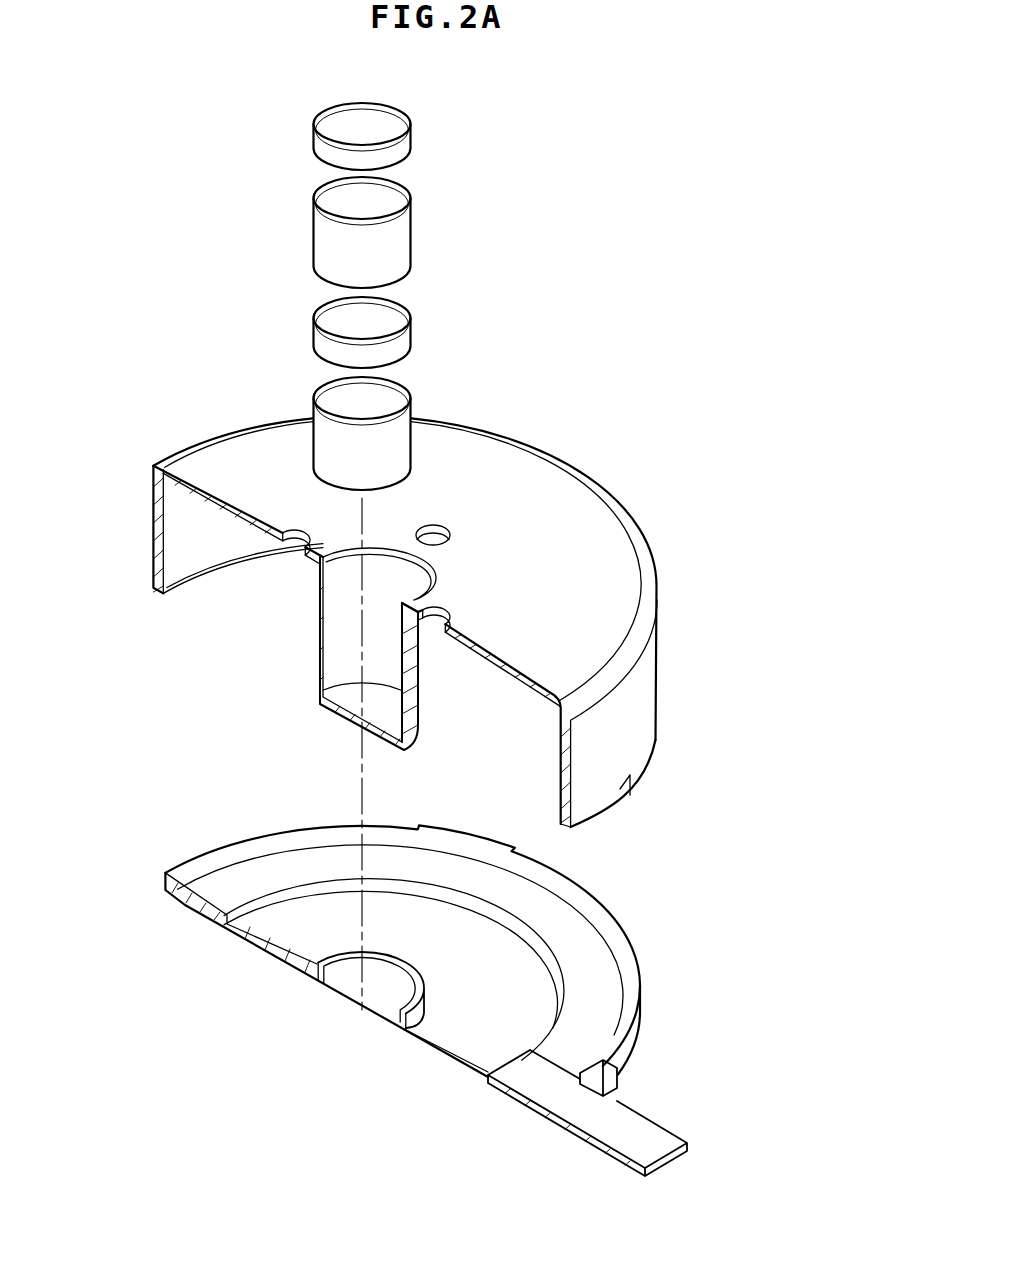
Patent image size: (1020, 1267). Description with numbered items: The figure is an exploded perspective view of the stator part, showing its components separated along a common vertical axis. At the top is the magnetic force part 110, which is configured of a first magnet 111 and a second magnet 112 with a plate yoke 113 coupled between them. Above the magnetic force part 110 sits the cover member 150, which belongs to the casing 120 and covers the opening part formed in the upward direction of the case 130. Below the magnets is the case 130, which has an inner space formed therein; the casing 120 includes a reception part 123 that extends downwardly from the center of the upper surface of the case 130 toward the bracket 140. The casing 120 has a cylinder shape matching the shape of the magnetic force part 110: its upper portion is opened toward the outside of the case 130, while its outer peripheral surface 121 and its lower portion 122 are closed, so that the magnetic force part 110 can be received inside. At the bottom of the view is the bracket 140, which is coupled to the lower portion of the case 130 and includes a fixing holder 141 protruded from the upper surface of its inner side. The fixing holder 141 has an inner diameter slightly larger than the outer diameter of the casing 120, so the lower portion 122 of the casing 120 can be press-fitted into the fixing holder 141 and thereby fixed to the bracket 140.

The magnetic force part 110 is at (476, 333).
The first magnet 111 is at (383, 203).
The second magnet 112 is at (438, 432).
The plate yoke 113 is at (382, 319).
The casing 120 is at (270, 649).
The outer peripheral surface 121 is at (320, 667).
The lower portion 122 is at (345, 708).
The reception part 123 is at (345, 630).
The case 130 is at (643, 675).
The bracket 140 is at (628, 993).
The fixing holder 141 is at (320, 952).
The cover member 150 is at (378, 126).